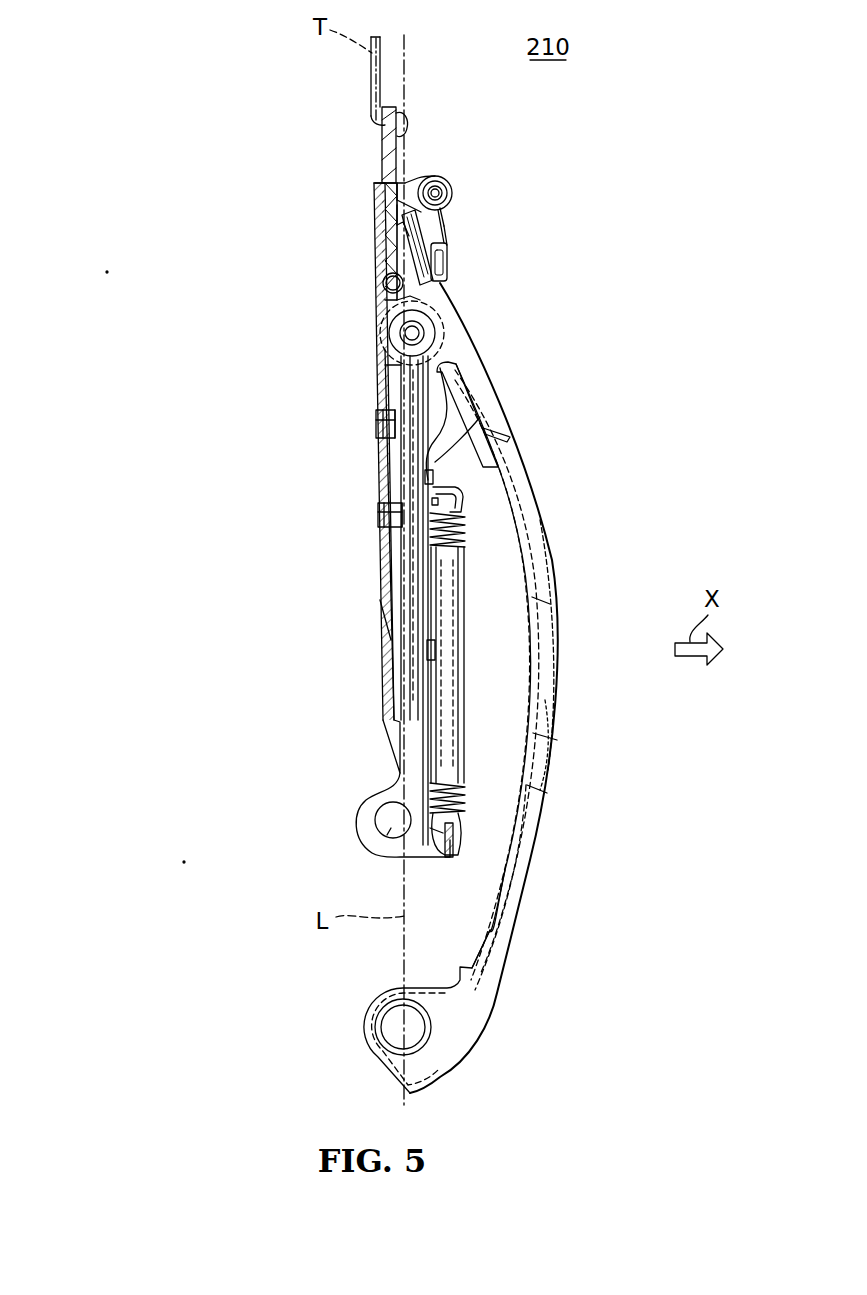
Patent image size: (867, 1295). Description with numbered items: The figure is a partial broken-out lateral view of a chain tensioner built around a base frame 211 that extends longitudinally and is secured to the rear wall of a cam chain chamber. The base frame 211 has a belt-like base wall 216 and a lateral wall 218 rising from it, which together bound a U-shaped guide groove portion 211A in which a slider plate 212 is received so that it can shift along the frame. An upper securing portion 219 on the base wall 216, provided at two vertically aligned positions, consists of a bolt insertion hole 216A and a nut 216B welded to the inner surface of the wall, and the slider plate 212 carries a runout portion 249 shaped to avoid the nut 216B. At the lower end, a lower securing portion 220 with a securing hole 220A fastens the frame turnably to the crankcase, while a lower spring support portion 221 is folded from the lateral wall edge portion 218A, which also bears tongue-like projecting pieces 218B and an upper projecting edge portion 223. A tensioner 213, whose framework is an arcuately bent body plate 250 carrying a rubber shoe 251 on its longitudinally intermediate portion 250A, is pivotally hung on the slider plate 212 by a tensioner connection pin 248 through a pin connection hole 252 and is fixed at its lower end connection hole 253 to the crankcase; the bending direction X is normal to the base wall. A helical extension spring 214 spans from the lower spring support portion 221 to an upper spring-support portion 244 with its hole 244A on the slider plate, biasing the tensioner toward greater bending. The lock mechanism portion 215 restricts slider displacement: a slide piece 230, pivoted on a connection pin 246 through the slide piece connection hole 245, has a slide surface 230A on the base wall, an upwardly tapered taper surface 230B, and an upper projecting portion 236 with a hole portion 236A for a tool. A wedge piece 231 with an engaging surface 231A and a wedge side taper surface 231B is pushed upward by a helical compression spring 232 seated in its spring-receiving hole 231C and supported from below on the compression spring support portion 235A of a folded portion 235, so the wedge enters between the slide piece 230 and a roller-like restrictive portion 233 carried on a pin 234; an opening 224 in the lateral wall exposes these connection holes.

The base frame 211 is at (381, 692).
The guide groove portion 211A is at (392, 457).
The slider plate 212 is at (400, 477).
The tensioner 213 is at (556, 582).
The helical extension spring 214 is at (468, 671).
The lock mechanism portion 215 is at (406, 172).
The base wall 216 is at (372, 340).
The bolt insertion hole 216A is at (383, 412).
The nut 216B is at (385, 405).
The lateral wall 218 is at (400, 750).
The lateral wall edge portion 218A is at (440, 750).
The tongue-like projecting piece 218B is at (460, 510).
The upper securing portion 219 is at (372, 408).
The lower securing portion 220 is at (378, 803).
The securing hole 220A is at (388, 828).
The lower spring support portion 221 is at (448, 858).
The projecting edge portion 223 is at (447, 300).
The opening 224 is at (388, 366).
The slide piece 230 is at (388, 115).
The slide surface 230A is at (385, 196).
The taper surface 230B is at (390, 220).
The wedge piece 231 is at (415, 178).
The engaging surface 231A is at (453, 193).
The wedge side taper surface 231B is at (446, 225).
The spring-receiving hole 231C is at (448, 238).
The helical compression spring 232 is at (436, 252).
The restrictive portion 233 is at (442, 188).
The pin 234 is at (442, 183).
The folded portion 235 is at (448, 268).
The compression spring support portion 235A is at (400, 243).
The upper projecting portion 236 is at (383, 150).
The hole portion 236A is at (401, 113).
The upper spring-support portion 244 is at (462, 490).
The hole 244A is at (450, 500).
The slide piece connection hole 245 is at (398, 300).
The connection pin 246 is at (384, 282).
The tensioner connection pin 248 is at (432, 345).
The runout portion 249 is at (394, 607).
The body plate 250 is at (538, 812).
The longitudinally intermediate portion 250A is at (556, 727).
The shoe 251 is at (560, 652).
The pin connection hole 252 is at (440, 328).
The lower end connection hole 253 is at (385, 1048).